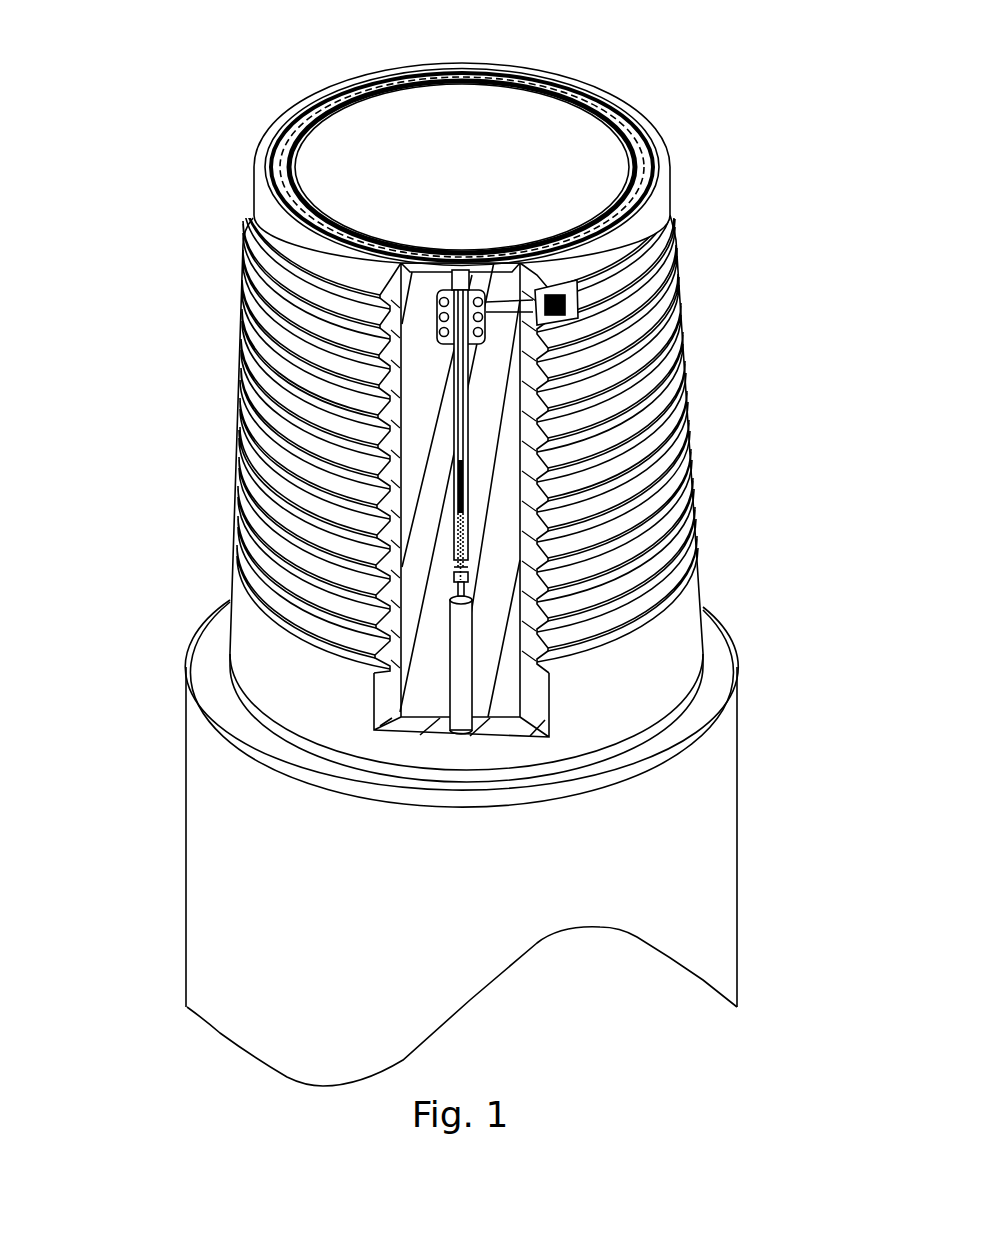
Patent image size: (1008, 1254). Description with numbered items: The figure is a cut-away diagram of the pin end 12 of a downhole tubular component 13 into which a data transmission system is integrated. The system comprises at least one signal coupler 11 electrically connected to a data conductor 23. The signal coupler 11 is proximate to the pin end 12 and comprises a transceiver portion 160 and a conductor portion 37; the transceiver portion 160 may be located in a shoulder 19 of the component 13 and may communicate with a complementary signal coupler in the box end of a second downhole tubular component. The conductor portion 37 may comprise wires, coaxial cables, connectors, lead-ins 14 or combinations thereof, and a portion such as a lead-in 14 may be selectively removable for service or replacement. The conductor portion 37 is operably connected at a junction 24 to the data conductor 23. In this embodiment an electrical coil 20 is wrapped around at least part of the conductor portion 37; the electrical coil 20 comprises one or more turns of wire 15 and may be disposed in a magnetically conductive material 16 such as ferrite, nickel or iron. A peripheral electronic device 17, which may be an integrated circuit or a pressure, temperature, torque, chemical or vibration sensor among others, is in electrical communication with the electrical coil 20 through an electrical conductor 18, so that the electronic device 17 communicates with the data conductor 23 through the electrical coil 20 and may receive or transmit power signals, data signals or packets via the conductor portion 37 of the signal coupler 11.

The signal coupler 11 is at (460, 245).
The pin end 12 is at (190, 433).
The downhole tubular component 13 is at (218, 807).
The lead-in 14 is at (390, 335).
The turns of wire 15 is at (439, 332).
The magnetically conductive material 16 is at (463, 380).
The peripheral electronic device 17 is at (572, 293).
The electrical conductor 18 is at (500, 343).
The shoulder 19 is at (637, 112).
The electrical coil 20 is at (540, 343).
The data conductor 23 is at (478, 614).
The junction 24 is at (470, 580).
The conductor portion 37 is at (449, 469).
The transceiver portion 160 is at (321, 86).